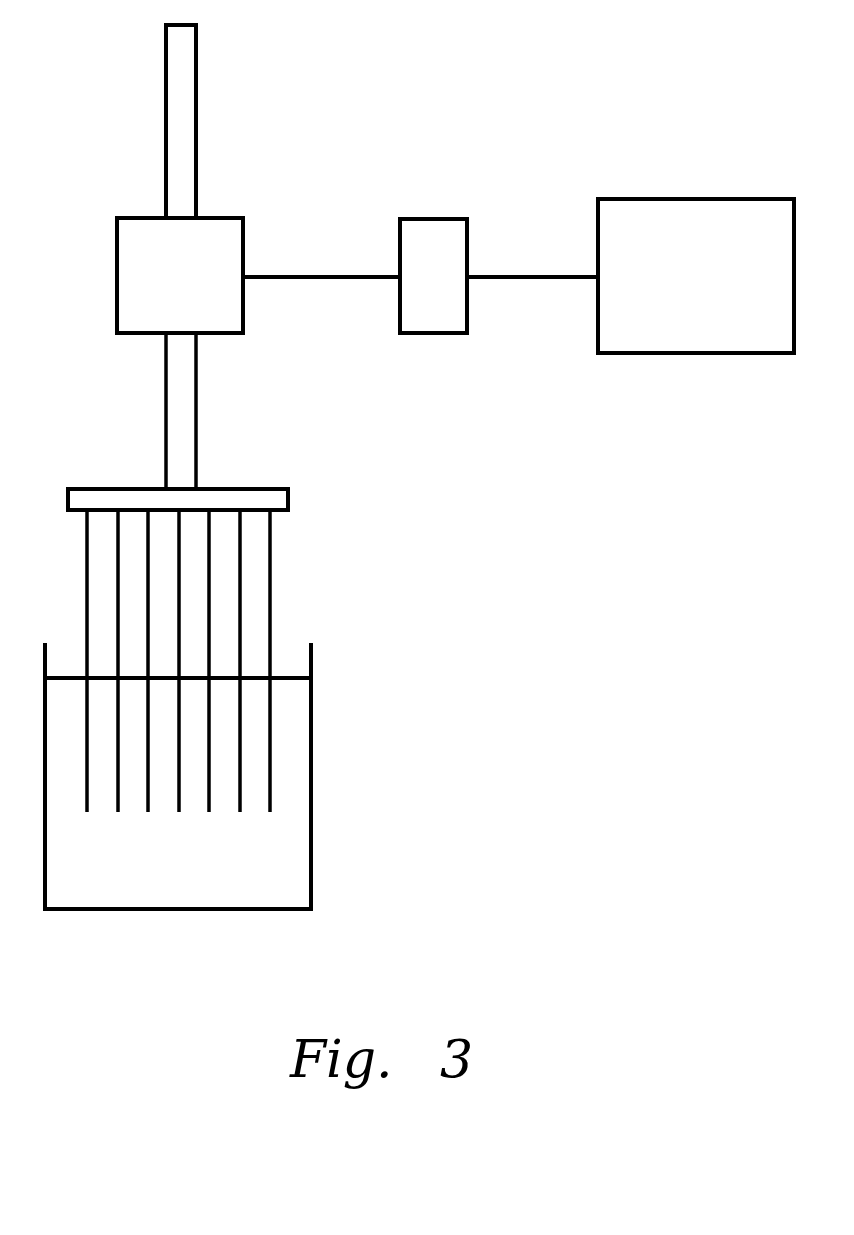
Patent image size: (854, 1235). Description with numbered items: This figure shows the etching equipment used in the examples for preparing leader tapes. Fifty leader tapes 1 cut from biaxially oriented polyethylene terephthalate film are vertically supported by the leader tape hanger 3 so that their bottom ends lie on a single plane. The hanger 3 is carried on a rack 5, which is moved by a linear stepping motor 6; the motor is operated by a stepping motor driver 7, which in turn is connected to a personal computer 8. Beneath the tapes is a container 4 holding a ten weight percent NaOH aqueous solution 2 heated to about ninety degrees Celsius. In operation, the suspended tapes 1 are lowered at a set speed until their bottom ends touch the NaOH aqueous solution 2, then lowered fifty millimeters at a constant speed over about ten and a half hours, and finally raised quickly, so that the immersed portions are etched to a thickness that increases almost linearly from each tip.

The leader tape 1 is at (270, 598).
The NaOH aqueous solution 2 is at (282, 862).
The leader tape hanger 3 is at (227, 489).
The container of NaOH aqueous solution 4 is at (311, 742).
The rack 5 is at (198, 124).
The linear stepping motor 6 is at (227, 218).
The stepping motor driver 7 is at (428, 219).
The personal computer 8 is at (693, 199).